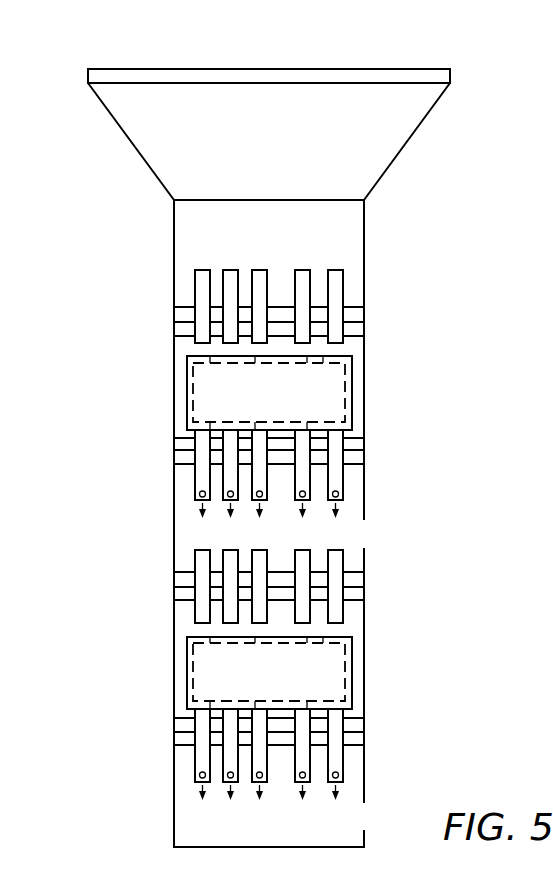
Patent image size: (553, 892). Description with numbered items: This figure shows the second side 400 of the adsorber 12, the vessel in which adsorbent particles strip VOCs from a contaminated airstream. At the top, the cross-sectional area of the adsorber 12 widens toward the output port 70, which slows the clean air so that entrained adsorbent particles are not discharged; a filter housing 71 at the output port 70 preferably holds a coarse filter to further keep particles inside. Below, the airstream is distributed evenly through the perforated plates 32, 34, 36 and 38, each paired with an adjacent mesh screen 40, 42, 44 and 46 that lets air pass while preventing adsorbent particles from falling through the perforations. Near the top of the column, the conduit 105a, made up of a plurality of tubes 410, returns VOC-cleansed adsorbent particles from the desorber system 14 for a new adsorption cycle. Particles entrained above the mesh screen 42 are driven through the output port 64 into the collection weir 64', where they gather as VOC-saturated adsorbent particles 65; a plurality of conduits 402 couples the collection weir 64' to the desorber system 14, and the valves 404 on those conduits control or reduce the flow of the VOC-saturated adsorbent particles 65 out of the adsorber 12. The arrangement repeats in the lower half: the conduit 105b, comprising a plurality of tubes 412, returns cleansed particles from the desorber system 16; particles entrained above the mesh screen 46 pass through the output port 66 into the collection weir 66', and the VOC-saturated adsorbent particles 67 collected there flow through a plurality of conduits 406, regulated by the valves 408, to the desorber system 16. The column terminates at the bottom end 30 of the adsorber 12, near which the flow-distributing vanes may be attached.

The output port 70 is at (371, 68).
The filter housing 71 is at (425, 76).
The adsorber 12 is at (369, 201).
The conduit 105a is at (350, 287).
The tubes 410 is at (337, 318).
The mesh screen 40 is at (170, 310).
The perforated plate 32 is at (184, 324).
The output port 64 is at (308, 393).
The collection weir 64' is at (314, 374).
The conduits 402 is at (352, 443).
The mesh screen 42 is at (170, 441).
The perforated plate 34 is at (184, 457).
The second side 400 is at (184, 500).
The VOC-saturated adsorbent particles 65 is at (342, 502).
The valves 404 is at (342, 493).
The desorber system 14 is at (317, 525).
The tubes 412 is at (338, 578).
The mesh screen 44 is at (170, 575).
The perforated plate 36 is at (184, 592).
The conduit 105b is at (352, 615).
The output port 66 is at (308, 673).
The collection weir 66' is at (314, 668).
The conduits 406 is at (352, 723).
The mesh screen 46 is at (170, 721).
The perforated plate 38 is at (184, 738).
The VOC-saturated adsorbent particles 67 is at (342, 785).
The valves 408 is at (343, 774).
The desorber system 16 is at (317, 807).
The bottom end 30 is at (194, 846).